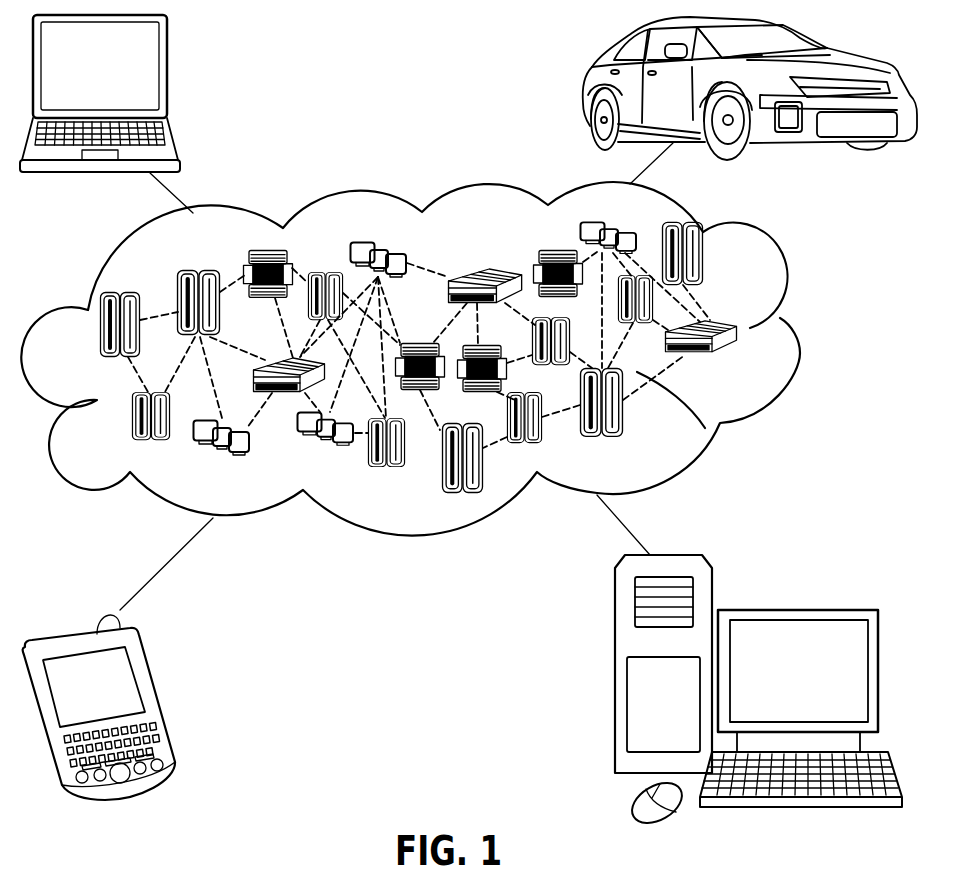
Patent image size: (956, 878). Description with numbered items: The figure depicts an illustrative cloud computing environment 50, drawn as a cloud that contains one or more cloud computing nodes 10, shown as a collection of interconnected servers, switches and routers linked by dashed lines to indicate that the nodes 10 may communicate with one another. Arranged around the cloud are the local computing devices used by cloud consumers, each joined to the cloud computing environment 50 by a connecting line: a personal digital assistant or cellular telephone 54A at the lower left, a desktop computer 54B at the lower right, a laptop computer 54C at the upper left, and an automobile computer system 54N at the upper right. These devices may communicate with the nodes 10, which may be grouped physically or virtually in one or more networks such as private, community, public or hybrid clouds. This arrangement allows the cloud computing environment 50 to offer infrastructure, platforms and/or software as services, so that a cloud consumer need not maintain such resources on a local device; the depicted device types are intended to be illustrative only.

The cloud computing node 10 is at (438, 376).
The cloud computing environment 50 is at (797, 338).
The personal digital assistant (PDA) or cellular telephone 54A is at (157, 695).
The desktop computer 54B is at (797, 608).
The laptop computer 54C is at (167, 73).
The automobile computer system 54N is at (586, 88).